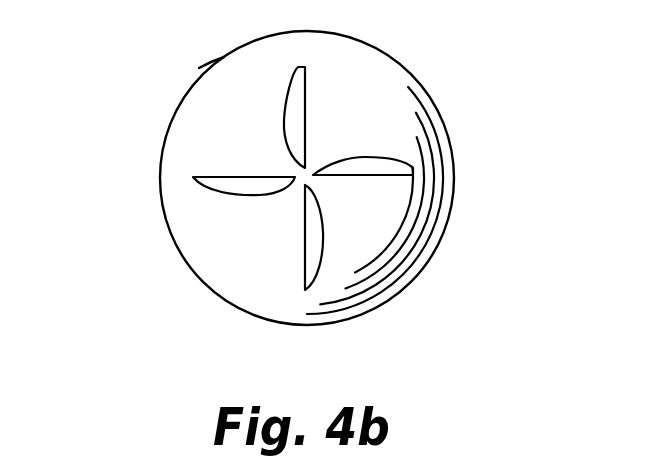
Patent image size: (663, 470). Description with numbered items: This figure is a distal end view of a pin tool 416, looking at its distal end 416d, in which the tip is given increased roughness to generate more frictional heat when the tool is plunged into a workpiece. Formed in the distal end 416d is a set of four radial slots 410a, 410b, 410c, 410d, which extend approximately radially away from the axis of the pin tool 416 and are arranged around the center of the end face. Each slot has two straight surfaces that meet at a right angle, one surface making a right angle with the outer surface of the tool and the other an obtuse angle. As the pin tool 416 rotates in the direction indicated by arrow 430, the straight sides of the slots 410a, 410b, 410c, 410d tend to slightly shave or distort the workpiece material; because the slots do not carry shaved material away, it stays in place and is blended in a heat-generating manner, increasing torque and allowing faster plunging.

The pin tool 416 is at (126, 187).
The distal end of the pin tool 416d is at (212, 67).
The radial slot 410a is at (245, 197).
The radial slot 410b is at (324, 233).
The radial slot 410c is at (362, 157).
The radial slot 410d is at (284, 127).
The arrow indicating direction of rotation 430 is at (435, 288).